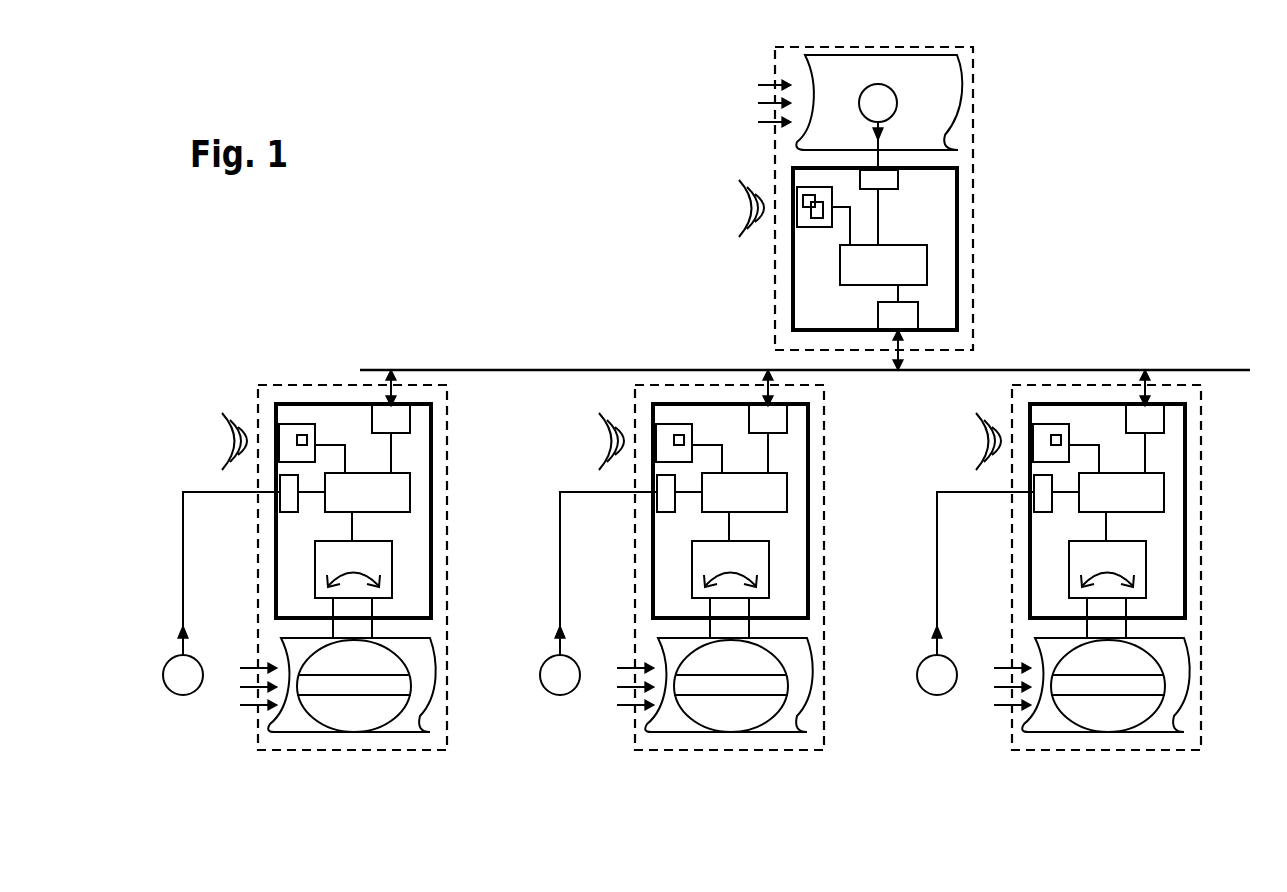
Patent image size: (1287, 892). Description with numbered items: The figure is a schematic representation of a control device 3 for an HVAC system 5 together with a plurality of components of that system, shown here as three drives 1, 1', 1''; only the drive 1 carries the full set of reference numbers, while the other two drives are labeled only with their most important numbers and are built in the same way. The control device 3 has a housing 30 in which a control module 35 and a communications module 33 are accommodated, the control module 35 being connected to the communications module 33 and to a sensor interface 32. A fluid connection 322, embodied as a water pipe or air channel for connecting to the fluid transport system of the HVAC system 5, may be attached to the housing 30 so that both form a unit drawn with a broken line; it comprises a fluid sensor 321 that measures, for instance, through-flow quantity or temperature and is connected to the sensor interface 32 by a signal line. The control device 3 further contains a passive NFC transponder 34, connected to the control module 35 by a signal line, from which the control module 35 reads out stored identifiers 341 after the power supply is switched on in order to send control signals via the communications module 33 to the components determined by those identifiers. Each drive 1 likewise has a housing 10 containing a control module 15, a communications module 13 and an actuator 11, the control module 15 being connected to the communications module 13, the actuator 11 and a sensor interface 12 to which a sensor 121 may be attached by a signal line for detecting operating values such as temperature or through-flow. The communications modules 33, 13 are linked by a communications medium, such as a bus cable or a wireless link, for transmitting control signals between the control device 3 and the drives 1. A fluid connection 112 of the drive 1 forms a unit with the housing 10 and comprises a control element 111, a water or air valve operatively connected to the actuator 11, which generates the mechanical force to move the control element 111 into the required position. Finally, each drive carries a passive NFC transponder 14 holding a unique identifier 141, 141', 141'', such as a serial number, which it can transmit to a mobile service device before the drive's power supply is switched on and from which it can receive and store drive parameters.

The drive 1 is at (320, 563).
The drive 1' is at (682, 585).
The drive 1'' is at (1059, 585).
The housing 10 is at (432, 540).
The actuator 11 is at (322, 565).
The control element 111 is at (365, 715).
The fluid connection 112 is at (300, 715).
The sensor interface 12 is at (288, 500).
The sensor 121 is at (183, 685).
The communications module 13 is at (398, 414).
The passive NFC transponder 14 is at (296, 428).
The unique identifier 141 is at (238, 417).
The unique identifier 141' is at (618, 425).
The unique identifier 141'' is at (995, 425).
The control module 15 is at (398, 491).
The control device 3 is at (1011, 77).
The housing 30 is at (797, 300).
The sensor interface 32 is at (888, 178).
The fluid sensor 321 is at (890, 103).
The fluid connection 322 is at (937, 85).
The communications module 33 is at (907, 310).
The passive NFC transponder 34 is at (655, 202).
The stored identifier 341 is at (813, 227).
The control module 35 is at (907, 253).
The HVAC system 5 is at (493, 270).